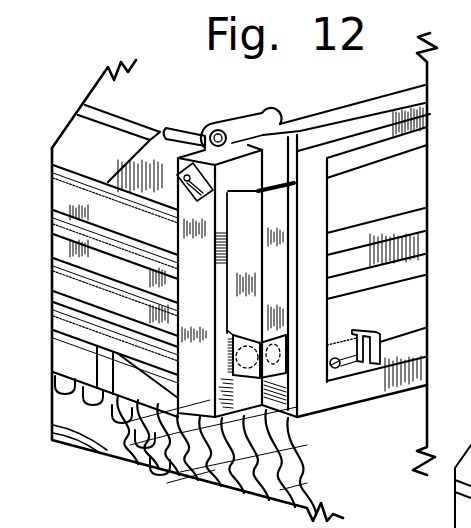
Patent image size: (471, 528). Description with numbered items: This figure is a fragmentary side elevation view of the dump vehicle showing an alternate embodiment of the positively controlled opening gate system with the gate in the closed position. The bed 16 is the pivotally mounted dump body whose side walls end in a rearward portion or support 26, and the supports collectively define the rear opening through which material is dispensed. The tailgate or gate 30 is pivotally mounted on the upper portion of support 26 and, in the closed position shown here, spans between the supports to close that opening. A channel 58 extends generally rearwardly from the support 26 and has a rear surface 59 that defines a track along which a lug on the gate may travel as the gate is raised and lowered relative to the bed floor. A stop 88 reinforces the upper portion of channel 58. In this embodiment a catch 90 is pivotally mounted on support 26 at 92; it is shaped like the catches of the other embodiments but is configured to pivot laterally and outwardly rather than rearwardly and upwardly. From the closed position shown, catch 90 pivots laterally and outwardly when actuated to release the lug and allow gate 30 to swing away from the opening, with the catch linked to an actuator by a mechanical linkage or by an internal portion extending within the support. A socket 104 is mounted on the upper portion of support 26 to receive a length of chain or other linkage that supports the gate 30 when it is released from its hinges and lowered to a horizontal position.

The bed 16 is at (131, 119).
The socket 104 is at (194, 168).
The stop 88 is at (266, 188).
The channel 58 is at (257, 241).
The support 26 is at (209, 288).
The rear surface 59 is at (276, 253).
The tailgate 30 is at (413, 205).
The catch 90 is at (267, 330).
The pivot mounting of catch 92 is at (230, 352).